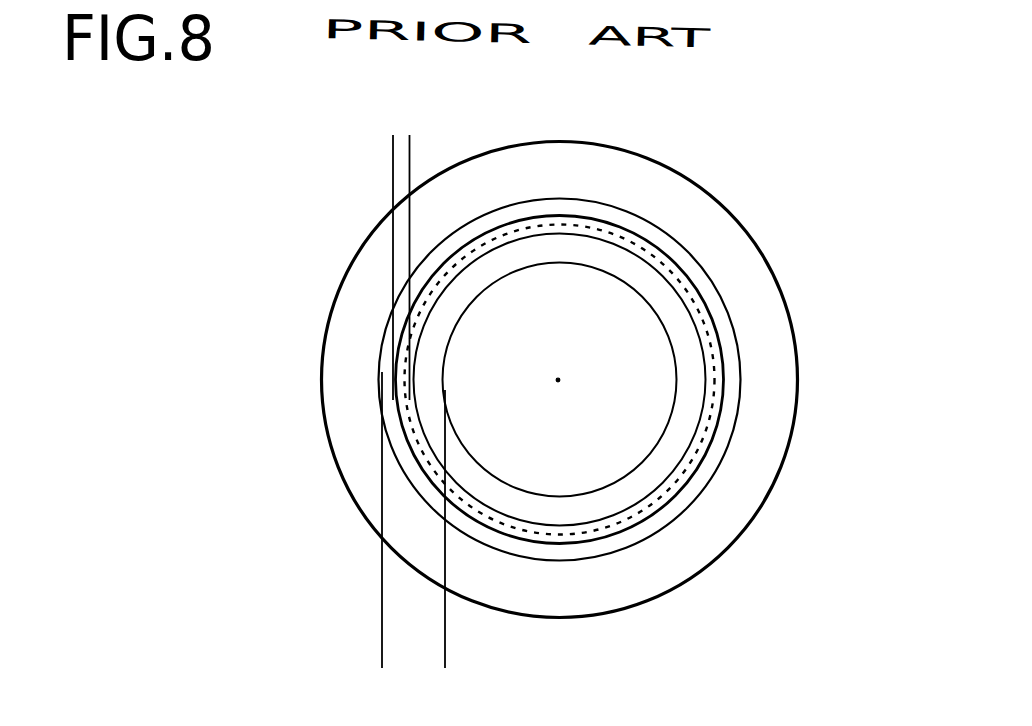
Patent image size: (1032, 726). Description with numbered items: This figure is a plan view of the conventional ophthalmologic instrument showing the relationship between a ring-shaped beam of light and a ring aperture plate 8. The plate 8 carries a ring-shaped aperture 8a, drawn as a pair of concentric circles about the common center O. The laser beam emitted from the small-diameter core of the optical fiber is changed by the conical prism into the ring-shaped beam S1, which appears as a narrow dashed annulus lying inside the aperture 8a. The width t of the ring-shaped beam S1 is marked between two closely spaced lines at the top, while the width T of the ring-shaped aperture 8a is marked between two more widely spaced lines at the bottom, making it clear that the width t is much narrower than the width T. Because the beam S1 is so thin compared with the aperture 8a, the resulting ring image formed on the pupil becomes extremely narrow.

The ring aperture plate 8 is at (772, 380).
The ring-shaped aperture 8a is at (663, 297).
The ring-shaped beam S1 is at (652, 503).
The center of tire O is at (558, 380).
The width of the ring-shaped beam t is at (363, 147).
The width of the ring-shaped aperture T is at (482, 643).